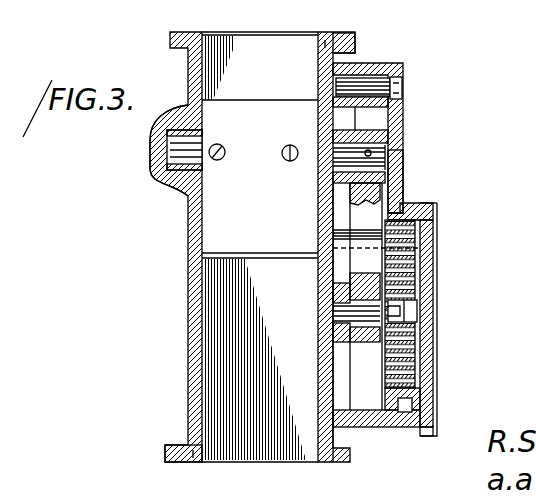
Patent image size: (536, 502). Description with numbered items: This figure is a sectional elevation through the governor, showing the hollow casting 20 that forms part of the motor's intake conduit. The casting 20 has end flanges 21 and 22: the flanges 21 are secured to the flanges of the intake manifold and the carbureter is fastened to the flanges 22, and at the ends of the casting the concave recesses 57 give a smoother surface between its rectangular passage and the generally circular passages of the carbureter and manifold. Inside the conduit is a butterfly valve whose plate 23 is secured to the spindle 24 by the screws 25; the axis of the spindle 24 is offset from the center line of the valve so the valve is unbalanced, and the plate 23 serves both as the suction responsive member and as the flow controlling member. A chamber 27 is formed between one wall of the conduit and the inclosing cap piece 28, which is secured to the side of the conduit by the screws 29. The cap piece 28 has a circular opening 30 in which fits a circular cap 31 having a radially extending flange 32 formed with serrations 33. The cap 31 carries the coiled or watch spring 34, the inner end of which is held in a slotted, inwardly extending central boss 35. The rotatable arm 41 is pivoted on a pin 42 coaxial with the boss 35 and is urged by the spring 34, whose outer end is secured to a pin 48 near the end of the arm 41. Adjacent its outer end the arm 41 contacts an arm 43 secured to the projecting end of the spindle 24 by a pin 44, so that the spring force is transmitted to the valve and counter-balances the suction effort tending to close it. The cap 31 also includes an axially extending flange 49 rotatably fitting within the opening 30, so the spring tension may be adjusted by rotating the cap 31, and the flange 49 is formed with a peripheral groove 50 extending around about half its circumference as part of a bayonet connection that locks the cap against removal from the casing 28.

The hollow casting 20 is at (195, 312).
The end flange 21 is at (355, 43).
The end flange 22 is at (167, 447).
The plate 23 is at (218, 198).
The spindle 24 is at (362, 147).
The screws 25 is at (288, 145).
The chamber 27 is at (370, 120).
The cap piece 28 is at (378, 165).
The screws 29 is at (400, 82).
The circular opening 30 is at (418, 210).
The circular cap 31 is at (433, 252).
The radially extending flange 32 is at (437, 215).
The serrations 33 is at (433, 205).
The coiled spring 34 is at (417, 283).
The central boss 35 is at (420, 305).
The arm 41 is at (360, 260).
The pin 42 is at (350, 310).
The arm 43 is at (348, 205).
The pin 44 is at (407, 172).
The pin 48 is at (348, 240).
The axially extending flange 49 is at (413, 393).
The peripheral groove 50 is at (407, 410).
The concave recesses 57 is at (327, 45).